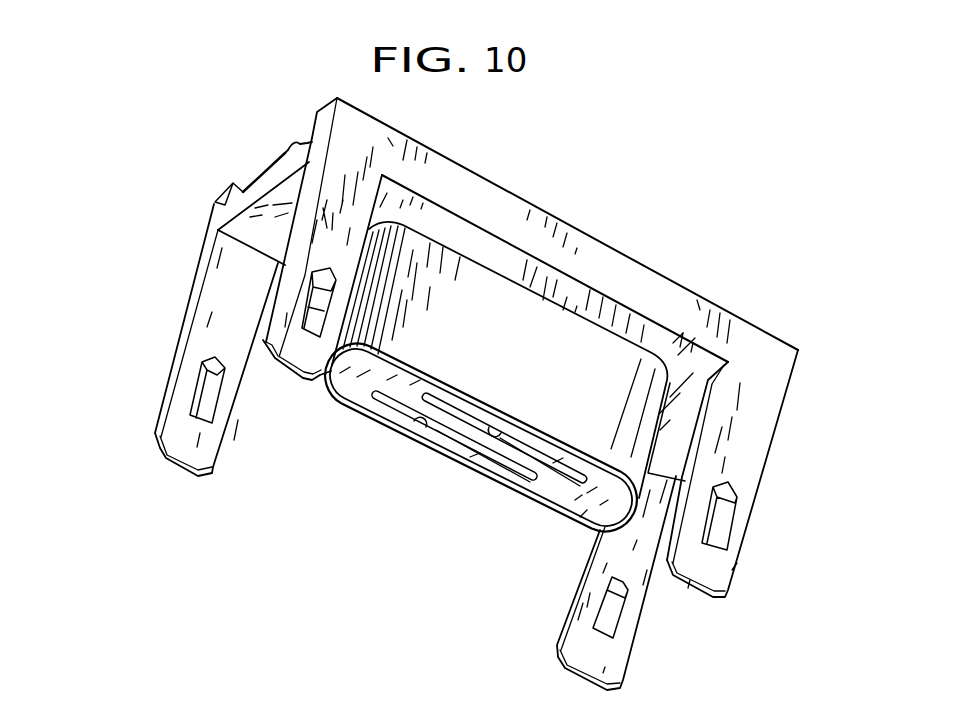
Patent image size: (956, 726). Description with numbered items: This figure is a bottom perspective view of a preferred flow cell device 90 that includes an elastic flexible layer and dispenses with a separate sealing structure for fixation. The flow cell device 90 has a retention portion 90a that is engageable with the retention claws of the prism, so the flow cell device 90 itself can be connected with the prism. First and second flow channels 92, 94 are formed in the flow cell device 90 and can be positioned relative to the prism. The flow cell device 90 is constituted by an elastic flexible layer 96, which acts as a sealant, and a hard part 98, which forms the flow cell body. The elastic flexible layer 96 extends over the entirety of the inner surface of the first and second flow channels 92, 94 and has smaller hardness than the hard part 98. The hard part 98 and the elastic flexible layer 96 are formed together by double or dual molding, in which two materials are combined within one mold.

The flow cell device 90 is at (588, 180).
The retention portion 90a is at (183, 385).
The first flow channel 92 is at (493, 430).
The second flow channel 94 is at (428, 418).
The elastic flexible layer 96 is at (563, 493).
The hard part 98 is at (250, 172).